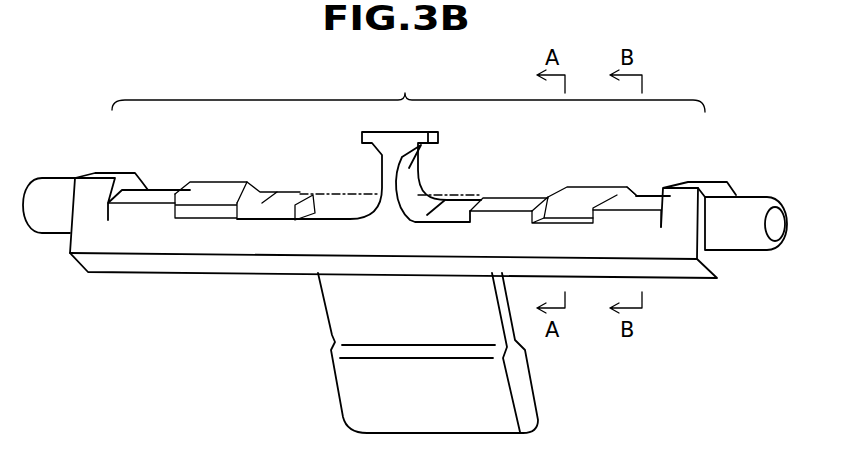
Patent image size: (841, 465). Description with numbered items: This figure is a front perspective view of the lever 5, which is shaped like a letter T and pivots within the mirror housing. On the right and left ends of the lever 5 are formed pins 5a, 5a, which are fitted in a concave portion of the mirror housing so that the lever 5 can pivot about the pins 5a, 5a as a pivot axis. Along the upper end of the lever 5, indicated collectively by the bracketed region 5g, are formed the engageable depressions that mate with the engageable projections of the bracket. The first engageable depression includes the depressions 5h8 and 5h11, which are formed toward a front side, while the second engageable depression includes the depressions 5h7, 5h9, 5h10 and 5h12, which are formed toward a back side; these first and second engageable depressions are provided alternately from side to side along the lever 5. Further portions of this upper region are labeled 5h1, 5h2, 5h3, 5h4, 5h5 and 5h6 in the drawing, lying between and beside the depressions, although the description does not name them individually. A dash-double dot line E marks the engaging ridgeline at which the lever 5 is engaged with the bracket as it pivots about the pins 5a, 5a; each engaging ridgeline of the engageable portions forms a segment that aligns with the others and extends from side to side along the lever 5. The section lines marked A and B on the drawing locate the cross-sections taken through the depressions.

The lever 5 is at (378, 233).
The pin 5a is at (60, 203).
The guide portion 5g is at (405, 98).
The groove 5h1 is at (160, 197).
The groove 5h2 is at (242, 187).
The groove 5h3 is at (283, 198).
The groove 5h4 is at (518, 198).
The groove 5h5 is at (574, 194).
The groove 5h6 is at (655, 204).
The depression 5h7 is at (180, 182).
The depression 5h8 is at (222, 215).
The depression 5h9 is at (298, 190).
The depression 5h10 is at (508, 196).
The depression 5h11 is at (572, 218).
The depression 5h12 is at (647, 188).
The engaging ridgeline E is at (355, 192).